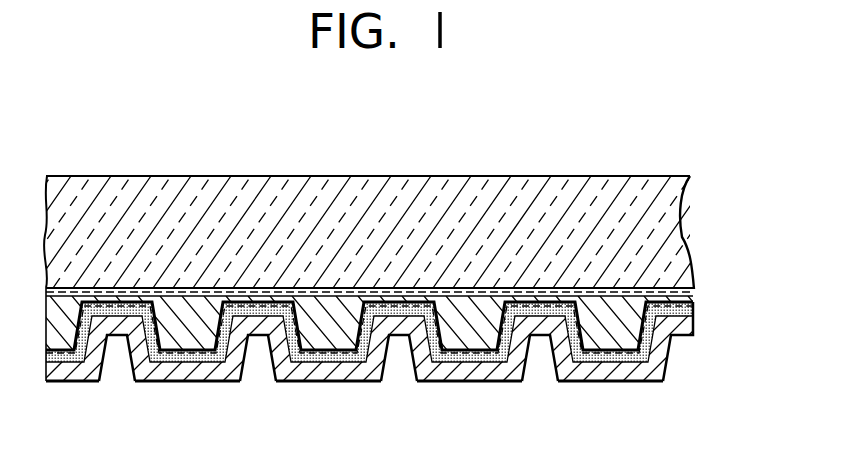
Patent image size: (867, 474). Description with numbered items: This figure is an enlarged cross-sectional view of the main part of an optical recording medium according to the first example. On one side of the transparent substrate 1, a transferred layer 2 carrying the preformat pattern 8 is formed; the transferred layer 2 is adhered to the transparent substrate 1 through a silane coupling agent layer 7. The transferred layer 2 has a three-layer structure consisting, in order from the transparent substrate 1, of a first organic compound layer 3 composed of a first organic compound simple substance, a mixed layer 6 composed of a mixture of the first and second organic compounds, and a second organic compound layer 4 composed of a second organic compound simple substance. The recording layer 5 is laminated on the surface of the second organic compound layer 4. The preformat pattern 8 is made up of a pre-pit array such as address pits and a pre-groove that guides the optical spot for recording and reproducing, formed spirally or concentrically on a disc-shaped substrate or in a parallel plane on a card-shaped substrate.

The transparent substrate 1 is at (613, 212).
The transferred layer 2 is at (410, 282).
The first organic compound layer 3 is at (693, 299).
The second organic compound layer 4 is at (694, 315).
The recording layer 5 is at (488, 374).
The mixed layer 6 is at (693, 307).
The silane coupling agent layer 7 is at (401, 290).
The preformat pattern 8 is at (480, 300).